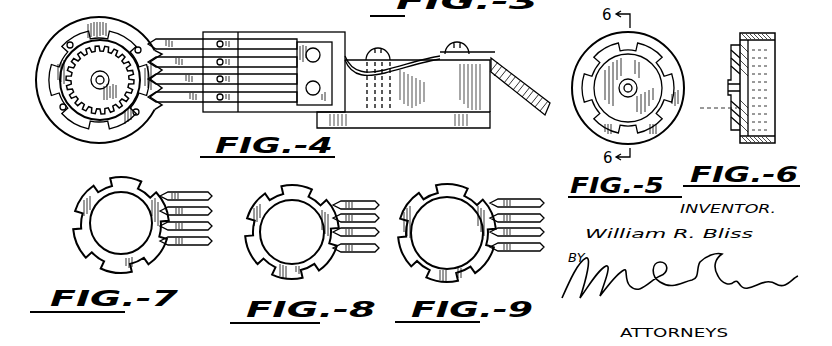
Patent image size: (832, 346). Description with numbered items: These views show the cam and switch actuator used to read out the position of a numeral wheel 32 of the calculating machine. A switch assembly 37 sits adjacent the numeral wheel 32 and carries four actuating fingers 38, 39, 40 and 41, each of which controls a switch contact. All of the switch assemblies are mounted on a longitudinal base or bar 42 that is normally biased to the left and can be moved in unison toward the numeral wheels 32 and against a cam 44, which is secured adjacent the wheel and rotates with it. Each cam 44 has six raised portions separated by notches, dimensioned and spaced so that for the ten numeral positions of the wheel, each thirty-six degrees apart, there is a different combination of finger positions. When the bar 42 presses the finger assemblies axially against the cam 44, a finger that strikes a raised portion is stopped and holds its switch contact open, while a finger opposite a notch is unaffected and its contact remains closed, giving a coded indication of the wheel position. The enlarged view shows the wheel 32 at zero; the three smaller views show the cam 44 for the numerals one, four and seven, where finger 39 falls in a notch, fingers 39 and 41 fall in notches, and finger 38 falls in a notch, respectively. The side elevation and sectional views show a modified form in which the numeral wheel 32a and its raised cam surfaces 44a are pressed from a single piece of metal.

In FIG. 4, the numeral wheel 32 is at (67, 33).
In FIG. 5, the numeral wheel 32a is at (645, 38).
In FIG. 6, the numeral wheel 32a is at (757, 33).
In FIG. 4, the switch assembly 37 is at (374, 40).
In FIG. 4, the actuating finger 38 is at (191, 45).
In FIG. 7, the actuating finger 38 is at (182, 196).
In FIG. 8, the actuating finger 38 is at (358, 206).
In FIG. 9, the actuating finger 38 is at (502, 202).
In FIG. 4, the actuating finger 39 is at (180, 61).
In FIG. 7, the actuating finger 39 is at (205, 210).
In FIG. 8, the actuating finger 39 is at (372, 218).
In FIG. 9, the actuating finger 39 is at (518, 216).
In FIG. 4, the actuating finger 40 is at (185, 82).
In FIG. 7, the actuating finger 40 is at (208, 230).
In FIG. 8, the actuating finger 40 is at (375, 234).
In FIG. 9, the actuating finger 40 is at (508, 238).
In FIG. 4, the actuating finger 41 is at (188, 99).
In FIG. 7, the actuating finger 41 is at (190, 245).
In FIG. 8, the actuating finger 41 is at (346, 251).
In FIG. 9, the actuating finger 41 is at (527, 250).
In FIG. 4, the longitudinal base or bar 42 is at (486, 118).
In FIG. 4, the cam 44 is at (88, 128).
In FIG. 7, the cam 44 is at (80, 242).
In FIG. 8, the cam 44 is at (318, 198).
In FIG. 9, the cam 44 is at (432, 186).
In FIG. 5, the raised cam surfaces 44a is at (722, 44).
In FIG. 6, the raised cam surfaces 44a is at (720, 87).